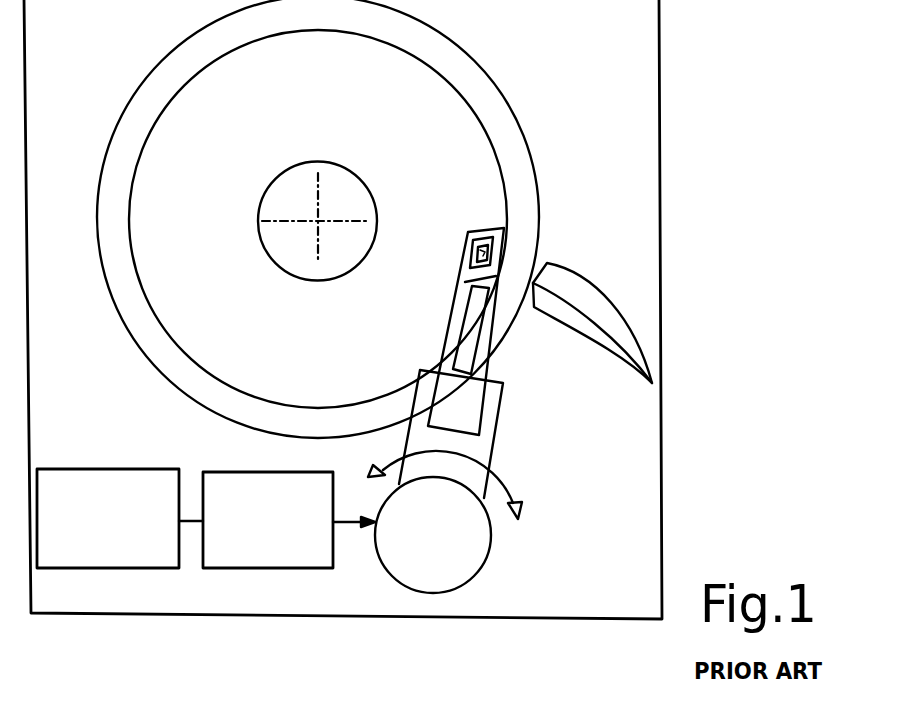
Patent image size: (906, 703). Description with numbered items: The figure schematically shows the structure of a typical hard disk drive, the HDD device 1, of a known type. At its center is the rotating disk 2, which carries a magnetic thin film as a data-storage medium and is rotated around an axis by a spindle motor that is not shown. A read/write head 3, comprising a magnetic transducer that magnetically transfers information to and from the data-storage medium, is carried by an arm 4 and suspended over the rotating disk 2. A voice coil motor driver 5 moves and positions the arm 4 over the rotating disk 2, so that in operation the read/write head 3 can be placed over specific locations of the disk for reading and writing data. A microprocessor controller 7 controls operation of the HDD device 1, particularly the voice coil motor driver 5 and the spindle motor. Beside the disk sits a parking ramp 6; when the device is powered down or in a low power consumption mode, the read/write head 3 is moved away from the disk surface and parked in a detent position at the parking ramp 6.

The HDD device 1 is at (408, 309).
The rotating disk 2 is at (426, 98).
The read/write head 3 is at (493, 242).
The arm 4 is at (492, 437).
The voice coil motor driver 5 is at (253, 563).
The parking ramp 6 is at (577, 290).
The microprocessor controller 7 is at (88, 550).